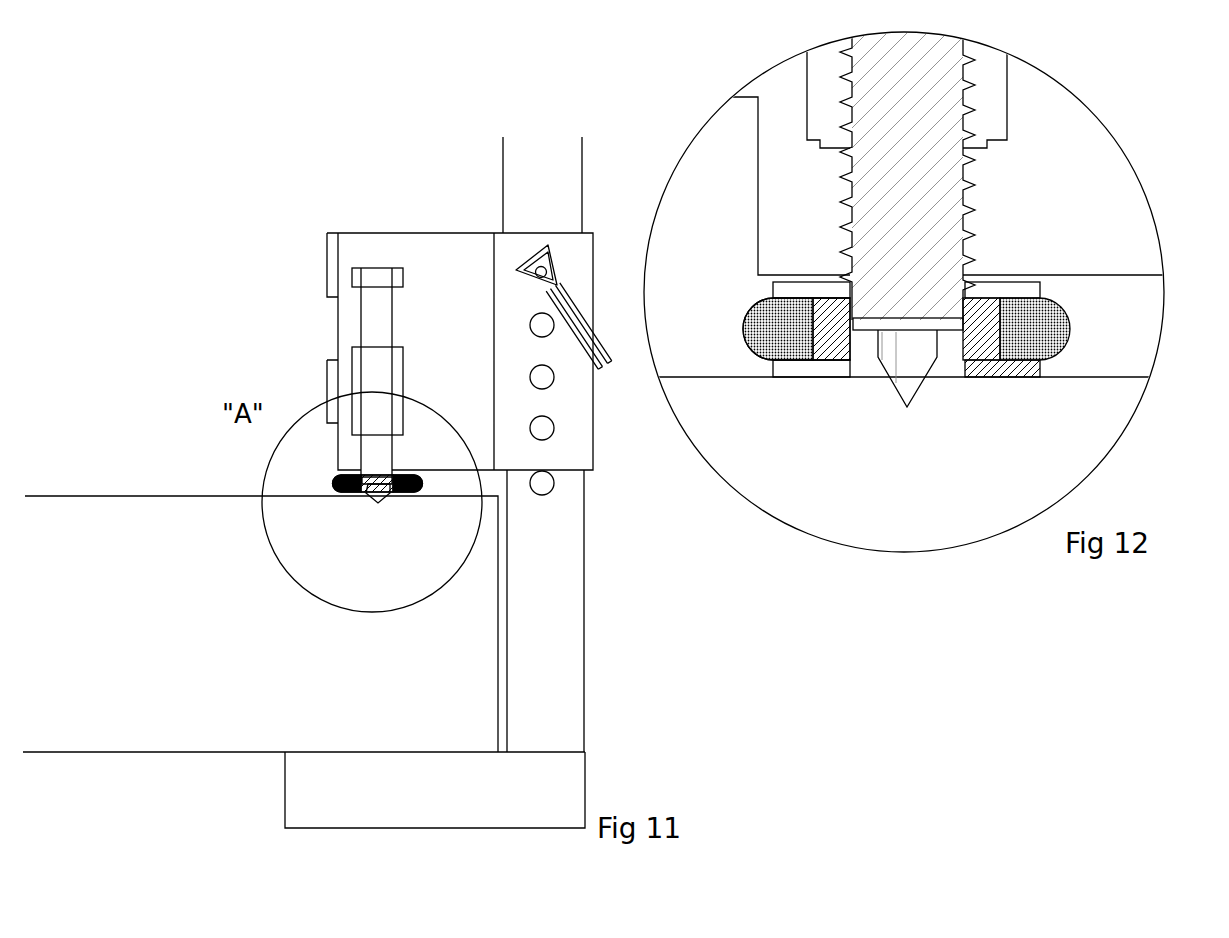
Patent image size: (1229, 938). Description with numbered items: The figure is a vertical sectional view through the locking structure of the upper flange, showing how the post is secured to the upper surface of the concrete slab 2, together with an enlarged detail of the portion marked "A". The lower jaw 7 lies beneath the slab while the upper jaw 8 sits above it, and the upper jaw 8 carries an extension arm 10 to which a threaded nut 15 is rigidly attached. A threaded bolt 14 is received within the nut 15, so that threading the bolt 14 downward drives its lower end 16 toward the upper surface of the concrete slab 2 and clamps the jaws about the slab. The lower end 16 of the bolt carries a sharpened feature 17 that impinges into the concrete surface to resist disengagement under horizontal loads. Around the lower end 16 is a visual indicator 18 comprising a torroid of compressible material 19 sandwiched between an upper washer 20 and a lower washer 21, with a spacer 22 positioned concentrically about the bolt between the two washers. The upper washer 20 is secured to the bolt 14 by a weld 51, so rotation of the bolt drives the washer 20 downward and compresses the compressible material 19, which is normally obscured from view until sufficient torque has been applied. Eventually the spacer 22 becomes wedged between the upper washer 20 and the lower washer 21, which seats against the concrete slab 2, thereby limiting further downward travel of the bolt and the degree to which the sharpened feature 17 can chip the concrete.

In FIG. 11, the concrete slab 2 is at (290, 688).
In FIG. 12, the concrete slab 2 is at (1010, 501).
In FIG. 11, the lower jaw 7 is at (380, 810).
In FIG. 11, the upper jaw 8 is at (436, 230).
In FIG. 11, the extension arm 10 is at (372, 238).
In FIG. 12, the extension arm 10 is at (945, 186).
In FIG. 11, the threaded bolt 14 is at (373, 305).
In FIG. 12, the threaded bolt 14 is at (907, 175).
In FIG. 11, the threaded nut 15 is at (347, 350).
In FIG. 12, the lower end of bolt 16 is at (940, 312).
In FIG. 11, the sharpened feature 17 is at (380, 502).
In FIG. 12, the sharpened feature 17 is at (897, 373).
In FIG. 11, the visual indicator 18 is at (330, 483).
In FIG. 12, the compressible material 19 is at (747, 343).
In FIG. 12, the upper washer 20 is at (783, 292).
In FIG. 12, the lower washer 21 is at (792, 372).
In FIG. 12, the spacer 22 is at (980, 343).
In FIG. 12, the weld 51 is at (850, 277).